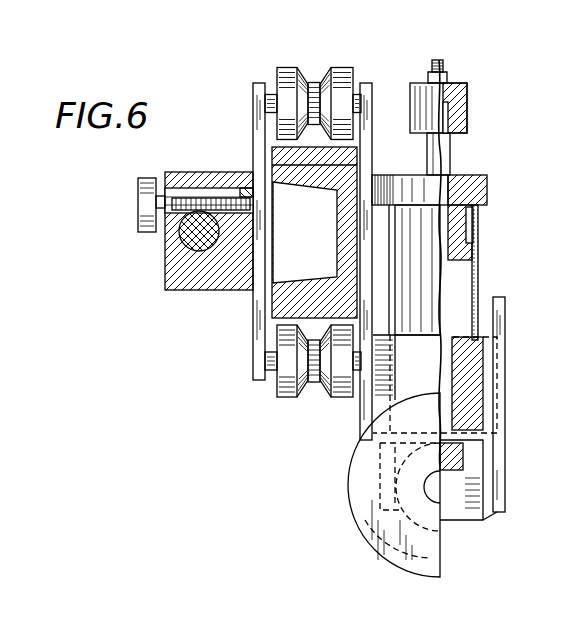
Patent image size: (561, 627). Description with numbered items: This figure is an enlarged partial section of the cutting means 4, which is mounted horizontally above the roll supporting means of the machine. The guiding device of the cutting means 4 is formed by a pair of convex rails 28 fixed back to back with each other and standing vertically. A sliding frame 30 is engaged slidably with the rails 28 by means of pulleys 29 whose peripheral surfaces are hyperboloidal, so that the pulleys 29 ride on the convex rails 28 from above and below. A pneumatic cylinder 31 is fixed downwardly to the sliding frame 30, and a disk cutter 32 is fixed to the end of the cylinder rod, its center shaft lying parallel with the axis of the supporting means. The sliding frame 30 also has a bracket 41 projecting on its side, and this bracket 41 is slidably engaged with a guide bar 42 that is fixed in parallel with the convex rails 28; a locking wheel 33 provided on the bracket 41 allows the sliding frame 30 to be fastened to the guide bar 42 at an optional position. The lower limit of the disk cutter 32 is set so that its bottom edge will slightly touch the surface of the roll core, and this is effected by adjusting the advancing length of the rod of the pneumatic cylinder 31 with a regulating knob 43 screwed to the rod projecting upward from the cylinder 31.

The cutting means 4 is at (316, 310).
The convex rails 28 is at (282, 156).
The pulleys 29 is at (300, 74).
The sliding frames 30 is at (258, 380).
The pneumatic cylinders 31 is at (479, 259).
The disk cutters 32 is at (384, 546).
The locking wheel 33 is at (143, 234).
The bracket 41 is at (200, 282).
The guide bar 42 is at (189, 243).
The regulating knobs 43 is at (468, 92).